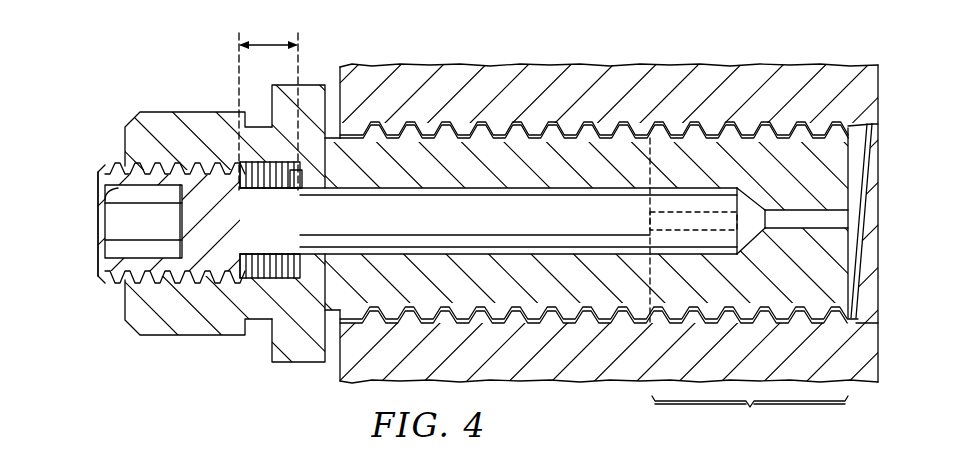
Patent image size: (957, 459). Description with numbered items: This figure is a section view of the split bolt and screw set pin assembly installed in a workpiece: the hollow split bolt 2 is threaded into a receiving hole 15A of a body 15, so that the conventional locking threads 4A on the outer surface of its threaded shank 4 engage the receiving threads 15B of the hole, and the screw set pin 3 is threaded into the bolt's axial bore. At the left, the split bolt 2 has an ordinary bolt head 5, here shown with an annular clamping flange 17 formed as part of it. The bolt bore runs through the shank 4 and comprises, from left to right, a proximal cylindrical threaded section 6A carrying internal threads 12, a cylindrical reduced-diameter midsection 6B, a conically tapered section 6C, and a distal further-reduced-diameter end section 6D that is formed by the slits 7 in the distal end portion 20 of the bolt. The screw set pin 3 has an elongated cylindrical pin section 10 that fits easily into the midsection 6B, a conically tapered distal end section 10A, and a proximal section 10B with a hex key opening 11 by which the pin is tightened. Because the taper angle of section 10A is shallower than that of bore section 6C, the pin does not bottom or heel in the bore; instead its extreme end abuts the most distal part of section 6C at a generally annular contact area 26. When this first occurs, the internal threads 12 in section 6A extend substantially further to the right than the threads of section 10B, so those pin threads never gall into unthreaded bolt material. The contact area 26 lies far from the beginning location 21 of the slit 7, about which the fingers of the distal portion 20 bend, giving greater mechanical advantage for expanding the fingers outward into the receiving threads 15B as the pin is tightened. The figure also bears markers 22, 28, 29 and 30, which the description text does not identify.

The split bolt 2 is at (188, 338).
The screw set pin 3 is at (99, 288).
The threaded shank 4 is at (448, 322).
The threads 4A is at (563, 136).
The bolt head 5 is at (235, 336).
The proximal cylindrical threaded section 6A is at (122, 165).
The cylindrical reduced-diameter midsection 6B is at (395, 190).
The conically tapered section 6C is at (722, 260).
The distal further-reduced-diameter end section 6D is at (840, 232).
The slits 7 is at (693, 214).
The pin section 10 is at (500, 255).
The conically tapered distal end section 10A is at (745, 194).
The section of screw set pin 10B is at (186, 150).
The hex key opening 11 is at (102, 220).
The internal threads 12 is at (170, 240).
The body 15 is at (686, 66).
The receiving hole 15A is at (880, 130).
The receiving threads 15B is at (560, 140).
The annular clamping flange 17 is at (298, 364).
The distal end portion 20 is at (750, 417).
The beginning location of slit 21 is at (650, 150).
The sleeve end wall 22 is at (868, 180).
The contact area 26 is at (760, 204).
The reference plane 28 is at (239, 58).
The reference plane 29 is at (298, 58).
The axial spacing 30 is at (268, 44).